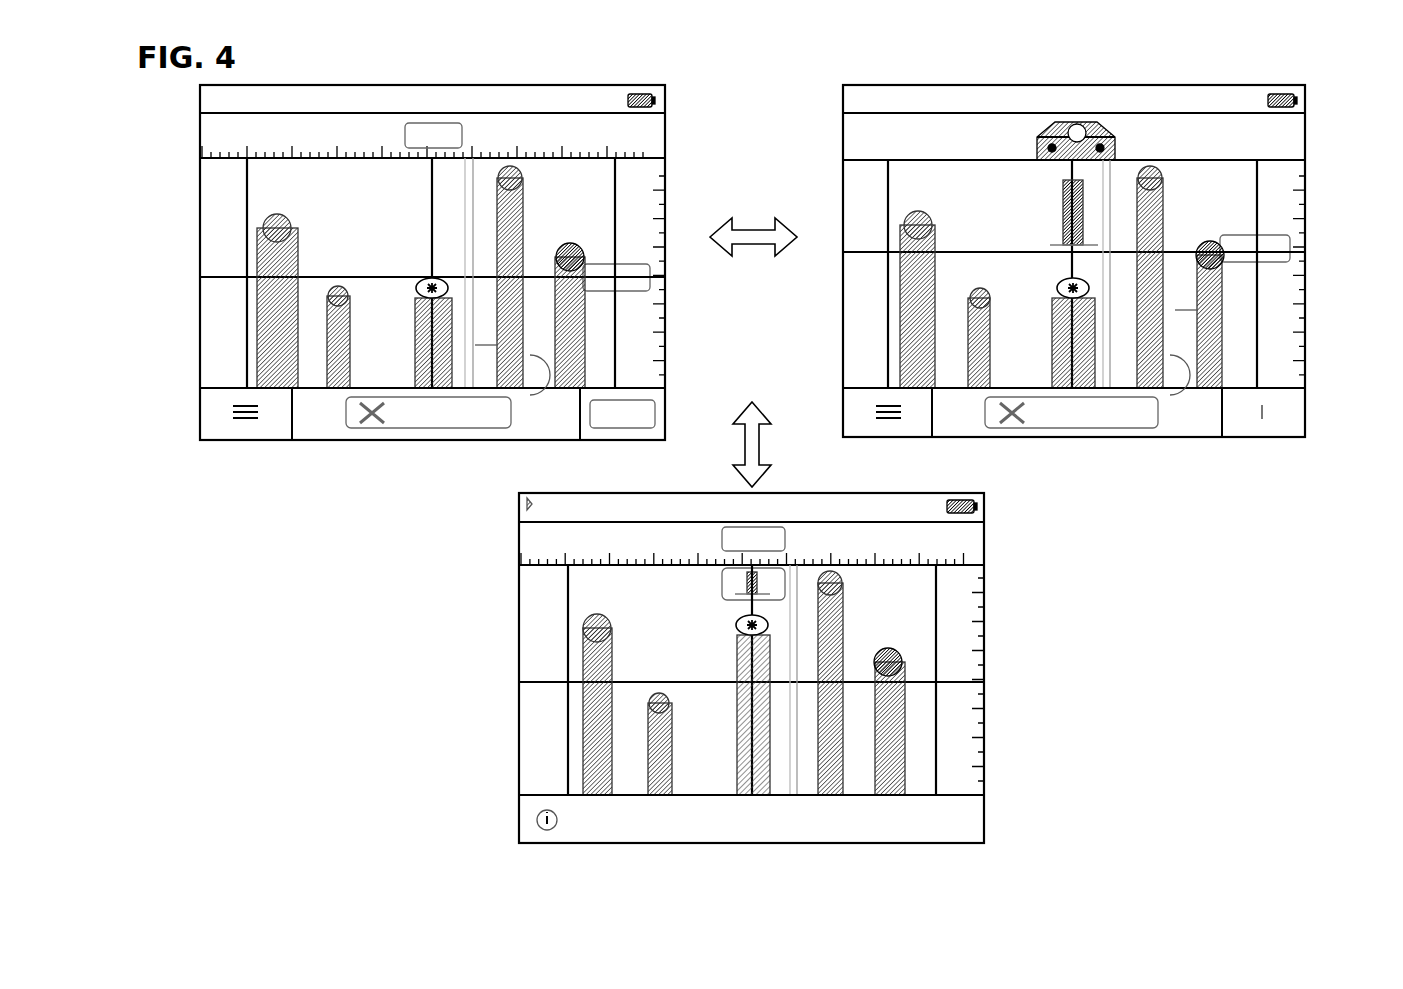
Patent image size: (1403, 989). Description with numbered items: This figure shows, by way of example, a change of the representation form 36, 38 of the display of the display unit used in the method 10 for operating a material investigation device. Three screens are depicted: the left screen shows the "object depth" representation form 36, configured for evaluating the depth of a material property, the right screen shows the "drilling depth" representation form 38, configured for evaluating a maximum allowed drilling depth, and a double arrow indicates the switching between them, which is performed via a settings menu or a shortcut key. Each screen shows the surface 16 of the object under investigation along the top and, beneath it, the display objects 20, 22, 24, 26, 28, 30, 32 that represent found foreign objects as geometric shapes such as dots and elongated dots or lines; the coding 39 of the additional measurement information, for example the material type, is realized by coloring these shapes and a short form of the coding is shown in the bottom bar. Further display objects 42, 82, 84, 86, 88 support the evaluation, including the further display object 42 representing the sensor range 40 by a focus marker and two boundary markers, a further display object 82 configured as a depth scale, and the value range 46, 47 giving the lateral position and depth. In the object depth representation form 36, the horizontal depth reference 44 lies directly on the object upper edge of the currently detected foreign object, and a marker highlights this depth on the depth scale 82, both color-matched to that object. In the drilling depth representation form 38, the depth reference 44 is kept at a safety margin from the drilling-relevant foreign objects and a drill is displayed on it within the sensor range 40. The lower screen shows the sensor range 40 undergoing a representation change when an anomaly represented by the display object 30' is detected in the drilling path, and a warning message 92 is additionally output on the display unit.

The method 10 is at (401, 157).
The surface 16 is at (873, 346).
The display object 20 is at (312, 360).
The display object 22 is at (580, 262).
The display object 24 is at (522, 182).
The display object 26 is at (263, 224).
The display object 28 is at (327, 297).
The display object 30 is at (723, 217).
The display object 30' is at (605, 680).
The display object 32 is at (232, 278).
The representation form 36 is at (197, 147).
The representation form 38 is at (1308, 127).
The coding 39 is at (403, 430).
The sensor range 40 is at (844, 575).
The further display object 42 is at (530, 395).
The depth reference 44 is at (512, 320).
The value range 46 is at (969, 515).
The value range 47 is at (676, 117).
The further display object 82 is at (660, 298).
The further display object 84 is at (200, 154).
The further display object 86 is at (530, 140).
The further display object 88 is at (752, 443).
The warning message 92 is at (722, 585).